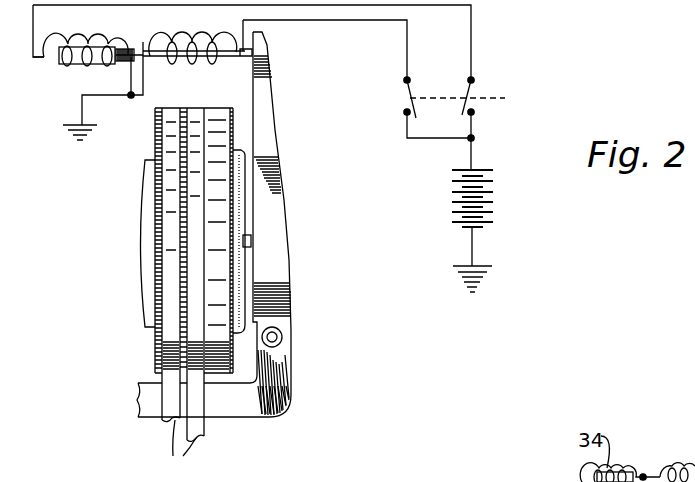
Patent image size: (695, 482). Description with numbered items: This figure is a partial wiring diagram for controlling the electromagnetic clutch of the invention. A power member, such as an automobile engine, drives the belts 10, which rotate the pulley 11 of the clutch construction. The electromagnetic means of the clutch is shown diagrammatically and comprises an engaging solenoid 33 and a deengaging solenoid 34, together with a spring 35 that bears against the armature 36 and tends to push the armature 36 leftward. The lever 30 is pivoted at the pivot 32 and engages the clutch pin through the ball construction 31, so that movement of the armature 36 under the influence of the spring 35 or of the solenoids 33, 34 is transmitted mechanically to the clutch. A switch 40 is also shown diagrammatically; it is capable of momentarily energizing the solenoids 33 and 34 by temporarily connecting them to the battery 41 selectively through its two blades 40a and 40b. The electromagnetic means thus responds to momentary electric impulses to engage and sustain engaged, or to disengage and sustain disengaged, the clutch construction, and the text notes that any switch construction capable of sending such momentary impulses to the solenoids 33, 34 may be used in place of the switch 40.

The belts 10 is at (189, 440).
The pulley 11 is at (156, 349).
The lever 30 is at (273, 157).
The ball construction 31 is at (251, 243).
The pivot 32 is at (288, 338).
The engaging solenoid 33 is at (195, 40).
The deengaging solenoid 34 is at (101, 40).
The spring 35 is at (134, 50).
The armature 36 is at (78, 66).
The switch 40 is at (445, 112).
The blade 40a is at (406, 86).
The blade 40b is at (474, 90).
The battery 41 is at (455, 180).